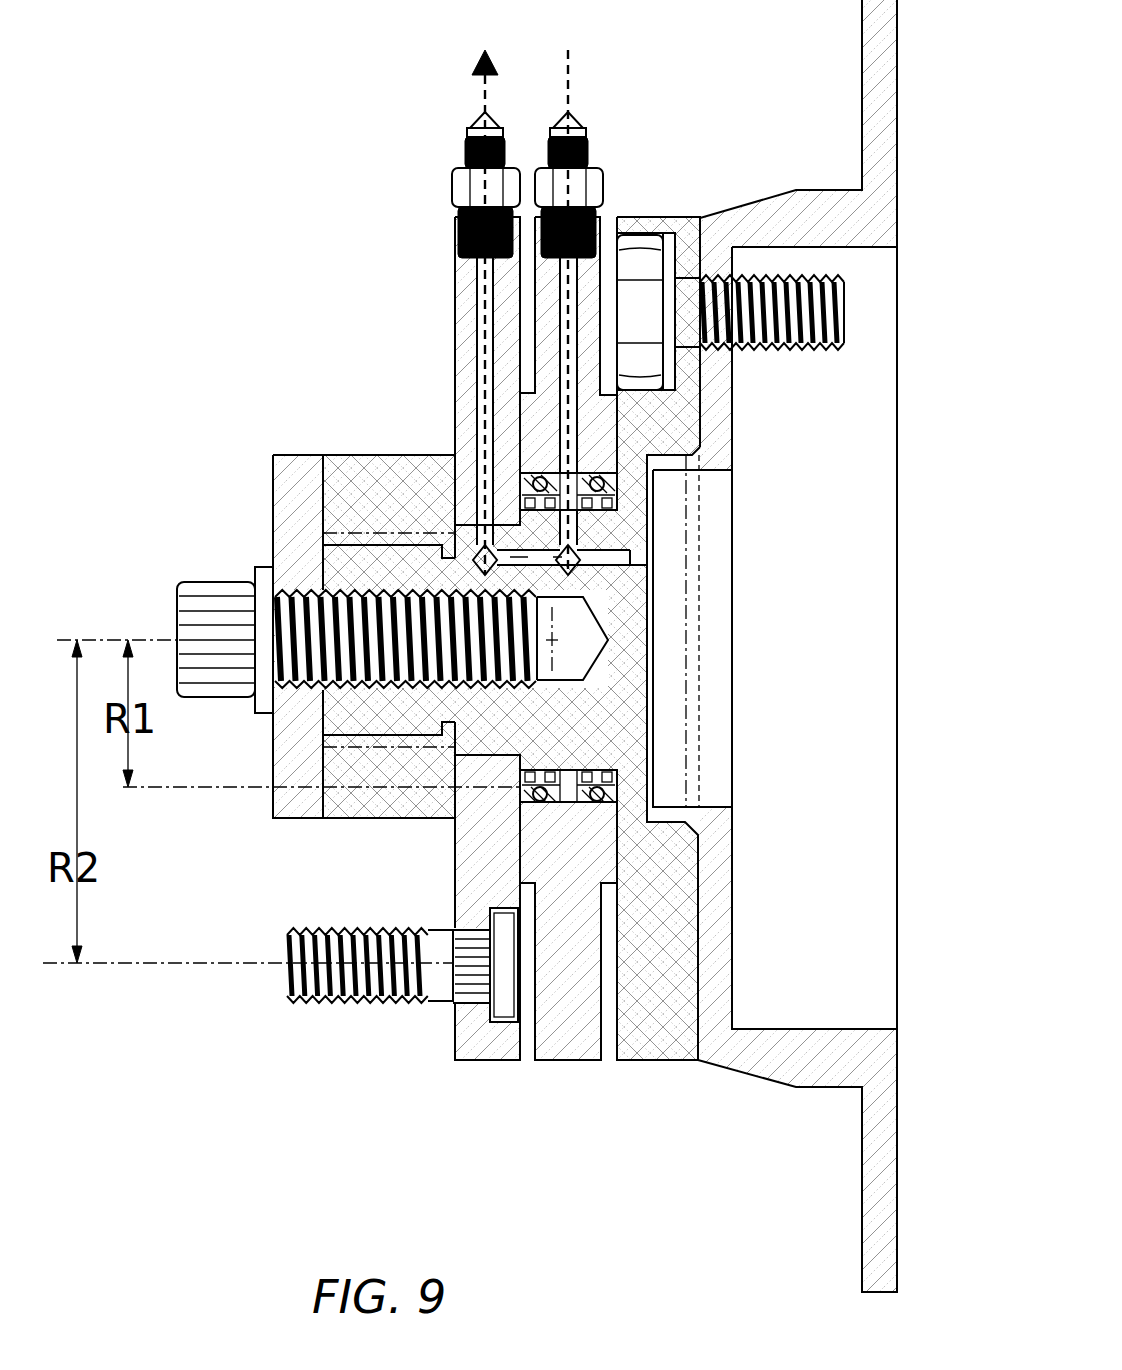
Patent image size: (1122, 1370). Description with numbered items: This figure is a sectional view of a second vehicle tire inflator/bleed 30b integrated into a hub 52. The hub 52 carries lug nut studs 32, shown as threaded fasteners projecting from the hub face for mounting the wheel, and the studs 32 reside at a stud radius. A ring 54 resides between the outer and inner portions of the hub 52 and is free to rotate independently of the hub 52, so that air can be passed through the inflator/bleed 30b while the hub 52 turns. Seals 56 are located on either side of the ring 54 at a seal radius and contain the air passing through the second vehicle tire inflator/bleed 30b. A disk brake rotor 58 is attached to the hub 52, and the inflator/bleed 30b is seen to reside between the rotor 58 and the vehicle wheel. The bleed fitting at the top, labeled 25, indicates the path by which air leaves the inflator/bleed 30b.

The bleed direction arrow 25 is at (485, 90).
The second vehicle tire inflator/bleed 30b is at (513, 642).
The lug nut studs 32 is at (300, 998).
The hub 52 is at (466, 725).
The ring 54 is at (575, 860).
The seals 56 is at (617, 787).
The disk brake rotor 58 is at (883, 1193).